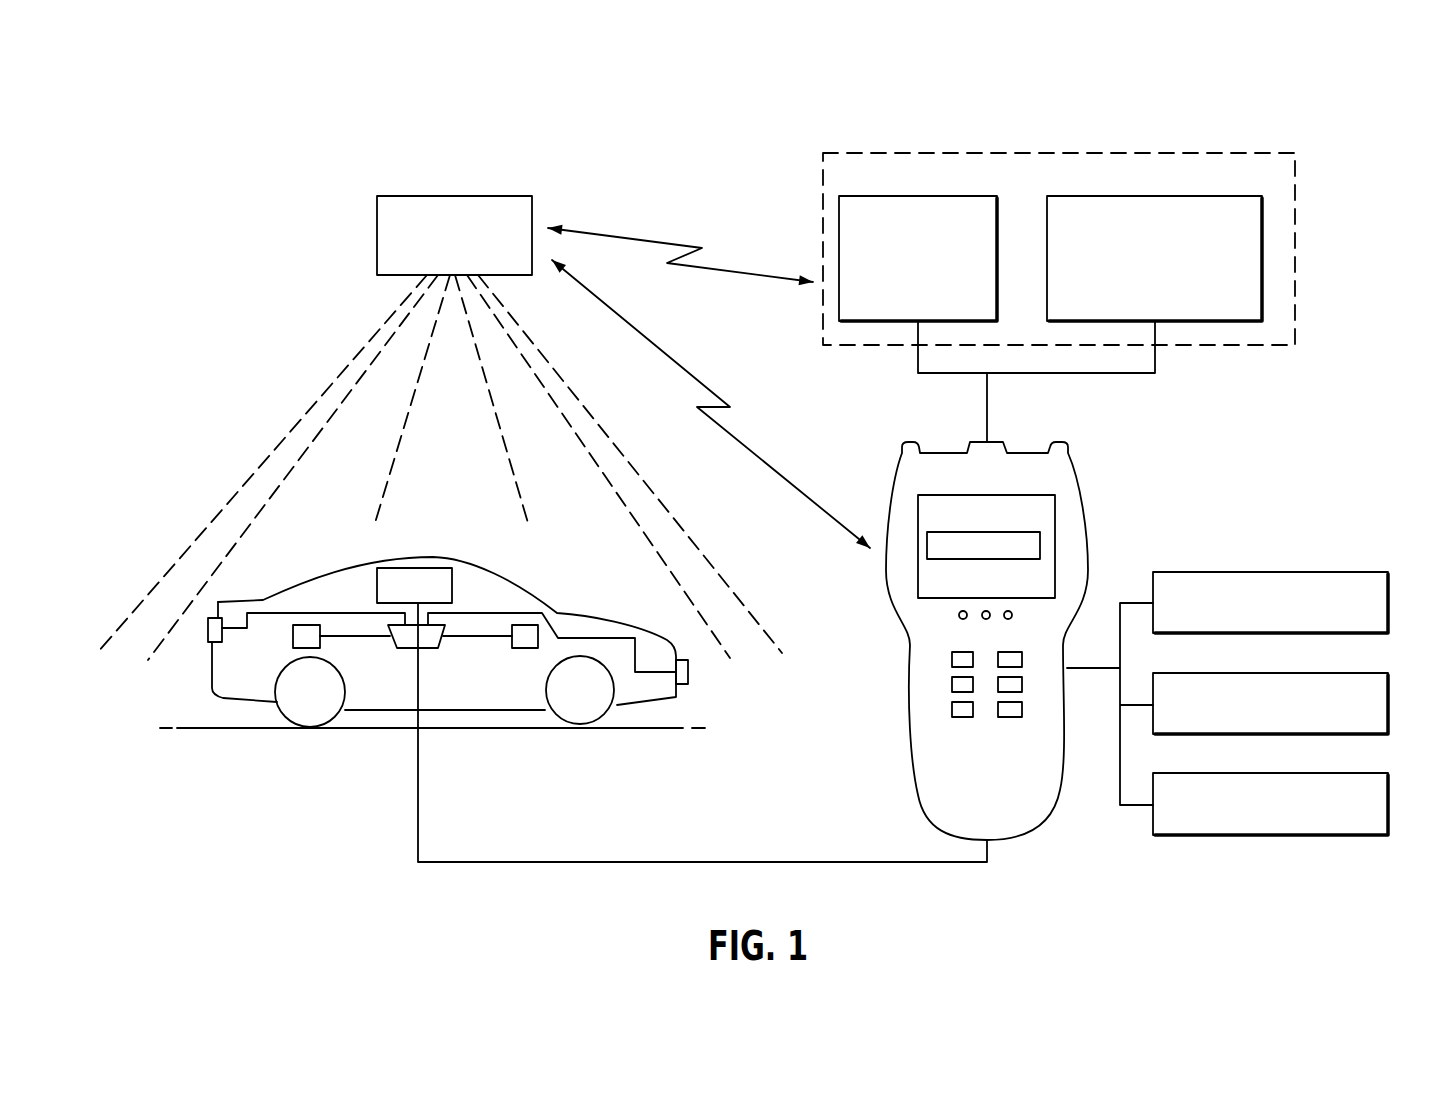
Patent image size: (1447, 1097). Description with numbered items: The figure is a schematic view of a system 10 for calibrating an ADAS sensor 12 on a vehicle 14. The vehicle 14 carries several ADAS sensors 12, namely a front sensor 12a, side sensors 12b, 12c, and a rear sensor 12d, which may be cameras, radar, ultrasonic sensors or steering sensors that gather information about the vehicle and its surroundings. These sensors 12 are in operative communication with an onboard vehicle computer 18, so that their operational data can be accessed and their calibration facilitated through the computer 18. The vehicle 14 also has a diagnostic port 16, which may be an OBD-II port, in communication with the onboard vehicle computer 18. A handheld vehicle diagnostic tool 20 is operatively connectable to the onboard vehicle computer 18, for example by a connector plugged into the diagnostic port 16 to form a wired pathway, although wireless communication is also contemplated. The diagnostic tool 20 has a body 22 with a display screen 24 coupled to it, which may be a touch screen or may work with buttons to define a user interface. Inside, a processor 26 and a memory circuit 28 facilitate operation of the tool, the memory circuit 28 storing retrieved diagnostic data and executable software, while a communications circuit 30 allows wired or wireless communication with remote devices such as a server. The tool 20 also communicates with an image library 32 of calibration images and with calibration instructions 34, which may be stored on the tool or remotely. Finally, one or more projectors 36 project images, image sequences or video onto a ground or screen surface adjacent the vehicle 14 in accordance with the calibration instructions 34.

The system 10 is at (340, 102).
The ADAS sensor 12 is at (439, 626).
The front sensor 12a is at (688, 672).
The side sensor 12b is at (531, 625).
The side sensor 12c is at (310, 625).
The rear sensor 12d is at (208, 640).
The vehicle 14 is at (466, 555).
The diagnostic port 16 is at (405, 640).
The onboard vehicle computer 18 is at (412, 568).
The handheld vehicle diagnostic tool 20 is at (993, 641).
The body 22 is at (912, 728).
The display screen 24 is at (1047, 508).
The processor 26 is at (1362, 572).
The memory circuit 28 is at (1362, 673).
The communications circuit 30 is at (1362, 773).
The image library 32 is at (923, 196).
The calibration instructions 34 is at (1185, 196).
The projector 36 is at (451, 196).